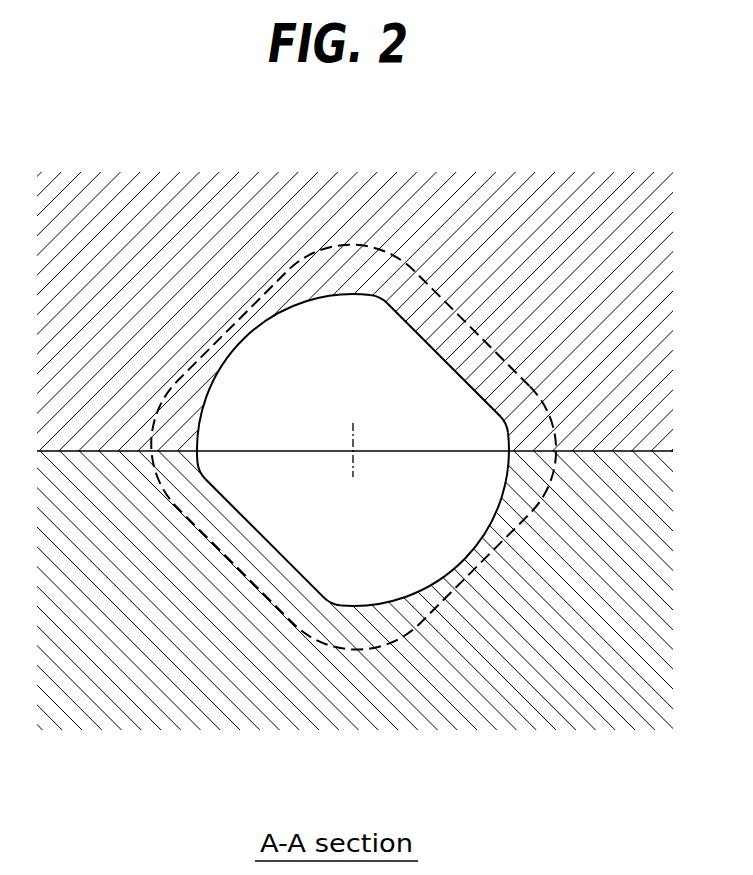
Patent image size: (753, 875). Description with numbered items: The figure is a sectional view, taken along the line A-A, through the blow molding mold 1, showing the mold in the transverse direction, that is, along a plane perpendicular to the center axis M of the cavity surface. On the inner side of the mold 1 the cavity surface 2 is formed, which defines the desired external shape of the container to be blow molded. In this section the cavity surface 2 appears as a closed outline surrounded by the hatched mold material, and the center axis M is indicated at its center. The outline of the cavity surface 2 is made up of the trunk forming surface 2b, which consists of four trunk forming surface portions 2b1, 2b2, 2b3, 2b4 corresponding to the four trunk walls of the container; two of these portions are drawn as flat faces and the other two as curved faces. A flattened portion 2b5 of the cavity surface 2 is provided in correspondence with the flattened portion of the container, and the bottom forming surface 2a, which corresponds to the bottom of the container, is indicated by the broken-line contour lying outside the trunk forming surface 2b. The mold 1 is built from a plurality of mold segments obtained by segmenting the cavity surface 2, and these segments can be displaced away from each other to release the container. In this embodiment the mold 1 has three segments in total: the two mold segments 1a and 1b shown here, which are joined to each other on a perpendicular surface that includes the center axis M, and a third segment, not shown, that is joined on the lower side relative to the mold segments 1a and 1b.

The blow molding mold 1 is at (376, 438).
The mold segment 1a is at (478, 163).
The mold segment 1b is at (461, 734).
The cavity surface 2 is at (353, 450).
The bottom forming surface 2a is at (243, 590).
The trunk forming surface 2b is at (353, 450).
The trunk forming surface portion 2b1 is at (250, 525).
The trunk forming surface portion 2b2 is at (466, 558).
The trunk forming surface portion 2b3 is at (450, 372).
The trunk forming surface portion 2b4 is at (243, 343).
The flattened portion 2b5 is at (337, 282).
The center axis M is at (342, 462).